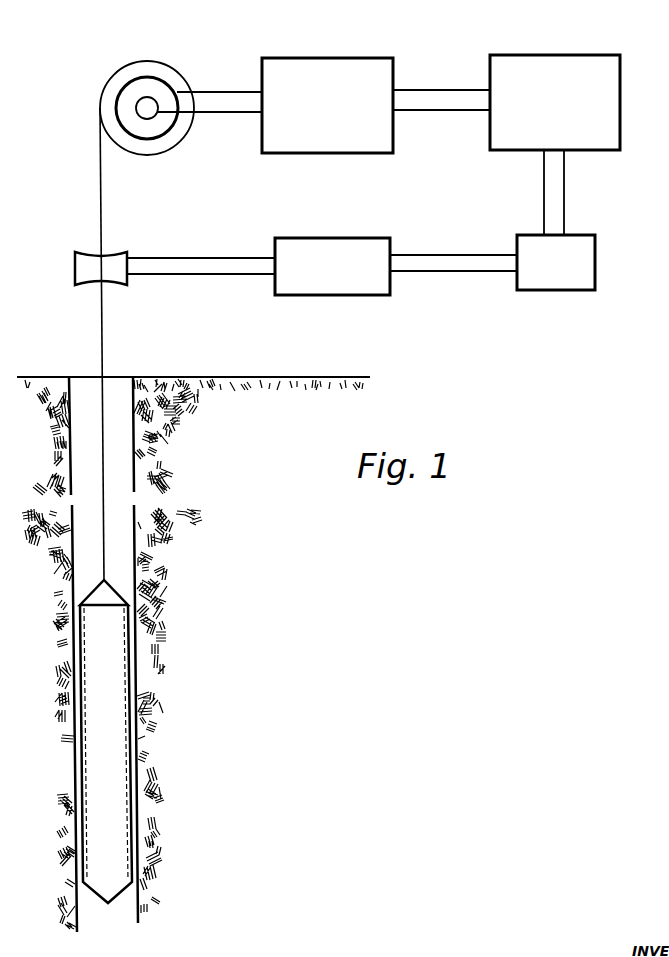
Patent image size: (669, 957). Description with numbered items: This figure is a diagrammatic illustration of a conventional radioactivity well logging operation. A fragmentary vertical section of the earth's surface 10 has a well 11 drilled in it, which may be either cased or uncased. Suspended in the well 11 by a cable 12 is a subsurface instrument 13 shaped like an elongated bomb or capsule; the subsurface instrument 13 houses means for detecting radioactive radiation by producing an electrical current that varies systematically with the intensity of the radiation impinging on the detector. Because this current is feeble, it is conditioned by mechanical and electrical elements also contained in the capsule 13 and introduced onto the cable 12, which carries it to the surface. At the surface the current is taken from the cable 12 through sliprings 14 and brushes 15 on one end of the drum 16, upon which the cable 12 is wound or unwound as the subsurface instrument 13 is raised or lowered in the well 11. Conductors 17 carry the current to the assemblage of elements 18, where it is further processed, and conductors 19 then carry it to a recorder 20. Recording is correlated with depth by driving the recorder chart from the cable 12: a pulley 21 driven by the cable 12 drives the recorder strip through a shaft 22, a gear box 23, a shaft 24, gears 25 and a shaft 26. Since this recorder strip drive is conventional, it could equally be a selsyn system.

The fragmentary vertical section of the earth's surface 10 is at (257, 476).
The well 11 is at (137, 587).
The cable 12 is at (100, 360).
The subsurface instrument 13 is at (133, 730).
The sliprings 14 is at (136, 100).
The brushes 15 is at (150, 80).
The drum 16 is at (103, 108).
The conductors 17 is at (236, 110).
The assemblage of elements 18 is at (349, 58).
The conductors 19 is at (431, 110).
The recorder 20 is at (569, 55).
The pulley 21 is at (113, 254).
The shaft 22 is at (178, 260).
The gear box 23 is at (356, 296).
The shaft 24 is at (476, 272).
The gears 25 is at (589, 290).
The shaft 26 is at (566, 208).